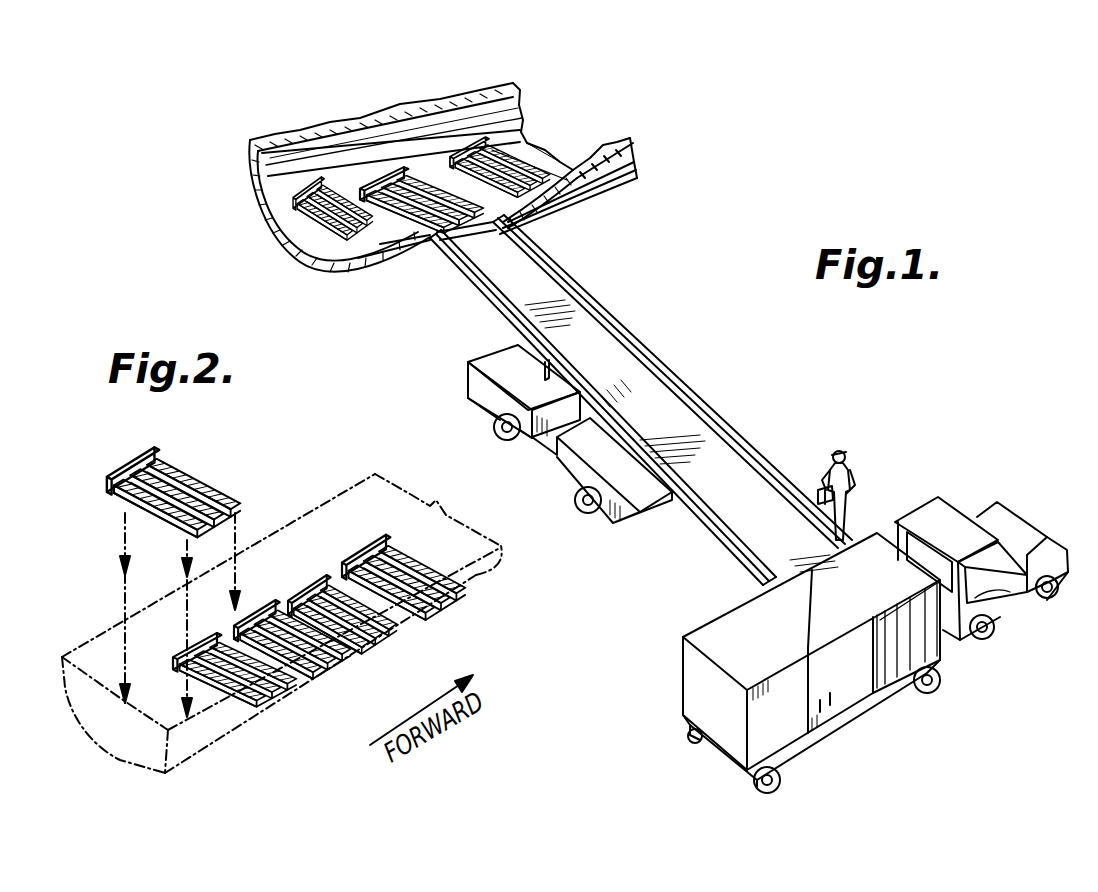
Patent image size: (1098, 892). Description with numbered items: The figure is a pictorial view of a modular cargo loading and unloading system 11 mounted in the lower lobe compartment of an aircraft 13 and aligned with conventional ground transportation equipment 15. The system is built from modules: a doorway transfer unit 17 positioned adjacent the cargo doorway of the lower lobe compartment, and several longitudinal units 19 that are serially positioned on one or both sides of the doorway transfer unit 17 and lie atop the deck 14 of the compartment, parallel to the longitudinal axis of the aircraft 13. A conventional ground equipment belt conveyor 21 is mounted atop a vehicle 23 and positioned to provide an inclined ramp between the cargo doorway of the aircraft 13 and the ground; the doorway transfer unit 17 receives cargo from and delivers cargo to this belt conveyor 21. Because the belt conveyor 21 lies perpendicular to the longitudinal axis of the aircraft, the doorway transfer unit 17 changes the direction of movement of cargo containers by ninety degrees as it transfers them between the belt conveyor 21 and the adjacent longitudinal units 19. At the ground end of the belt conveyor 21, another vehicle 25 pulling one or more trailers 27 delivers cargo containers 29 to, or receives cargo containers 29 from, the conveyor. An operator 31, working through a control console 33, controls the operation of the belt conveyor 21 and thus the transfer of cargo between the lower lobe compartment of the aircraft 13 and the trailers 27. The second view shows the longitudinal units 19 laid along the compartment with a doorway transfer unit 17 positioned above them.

In FIG. 1, the modular cargo loading and unloading system 11 is at (357, 143).
In FIG. 1, the aircraft 13 is at (510, 103).
In FIG. 1, the deck 14 is at (545, 163).
In FIG. 1, the ground transportation equipment 15 is at (697, 392).
In FIG. 1, the doorway transfer unit 17 is at (387, 160).
In FIG. 2, the doorway transfer unit 17 is at (184, 466).
In FIG. 1, the longitudinal units 19 is at (307, 210).
In FIG. 2, the longitudinal units 19 is at (261, 700).
In FIG. 1, the ground equipment belt conveyor 21 is at (622, 343).
In FIG. 1, the vehicle 23 is at (483, 387).
In FIG. 1, the vehicle 25 is at (947, 520).
In FIG. 1, the trailers 27 is at (883, 697).
In FIG. 1, the cargo containers 29 is at (713, 627).
In FIG. 1, the operator 31 is at (857, 487).
In FIG. 1, the control console 33 is at (823, 487).